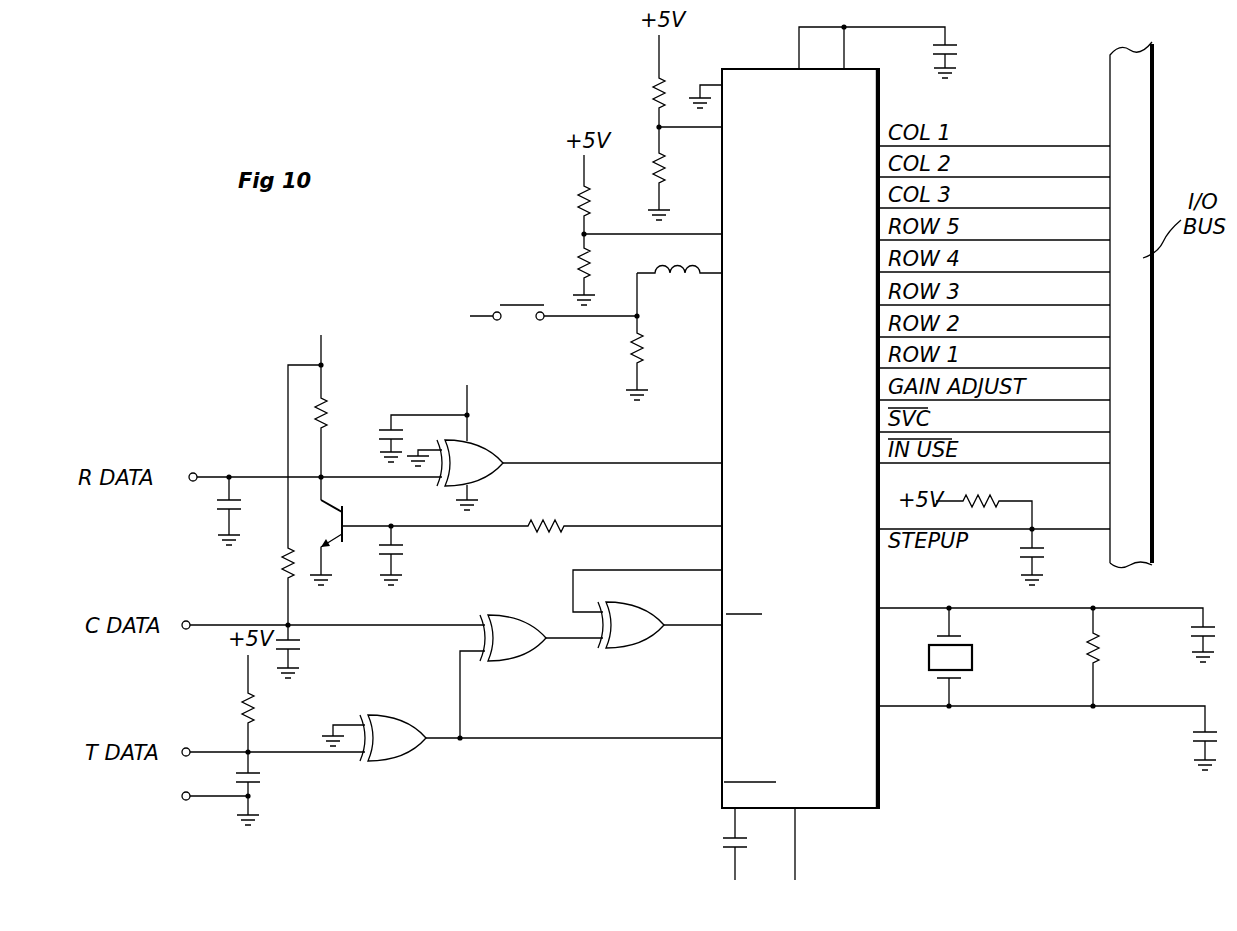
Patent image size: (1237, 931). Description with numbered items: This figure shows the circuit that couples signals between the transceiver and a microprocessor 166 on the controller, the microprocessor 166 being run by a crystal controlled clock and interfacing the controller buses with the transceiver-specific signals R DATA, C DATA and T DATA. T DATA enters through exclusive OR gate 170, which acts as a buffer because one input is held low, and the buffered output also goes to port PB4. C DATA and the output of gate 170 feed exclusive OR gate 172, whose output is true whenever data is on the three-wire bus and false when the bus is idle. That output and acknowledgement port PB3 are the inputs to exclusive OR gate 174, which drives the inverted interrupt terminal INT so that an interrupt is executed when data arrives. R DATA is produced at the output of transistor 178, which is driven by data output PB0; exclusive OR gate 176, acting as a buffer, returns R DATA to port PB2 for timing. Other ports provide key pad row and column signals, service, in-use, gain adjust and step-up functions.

The microprocessor 166 is at (722, 416).
The exclusive OR gate 170 is at (408, 755).
The exclusive OR gate 172 is at (518, 648).
The exclusive OR gate 174 is at (628, 640).
The exclusive OR gate 176 is at (483, 453).
The transistor 178 is at (334, 506).